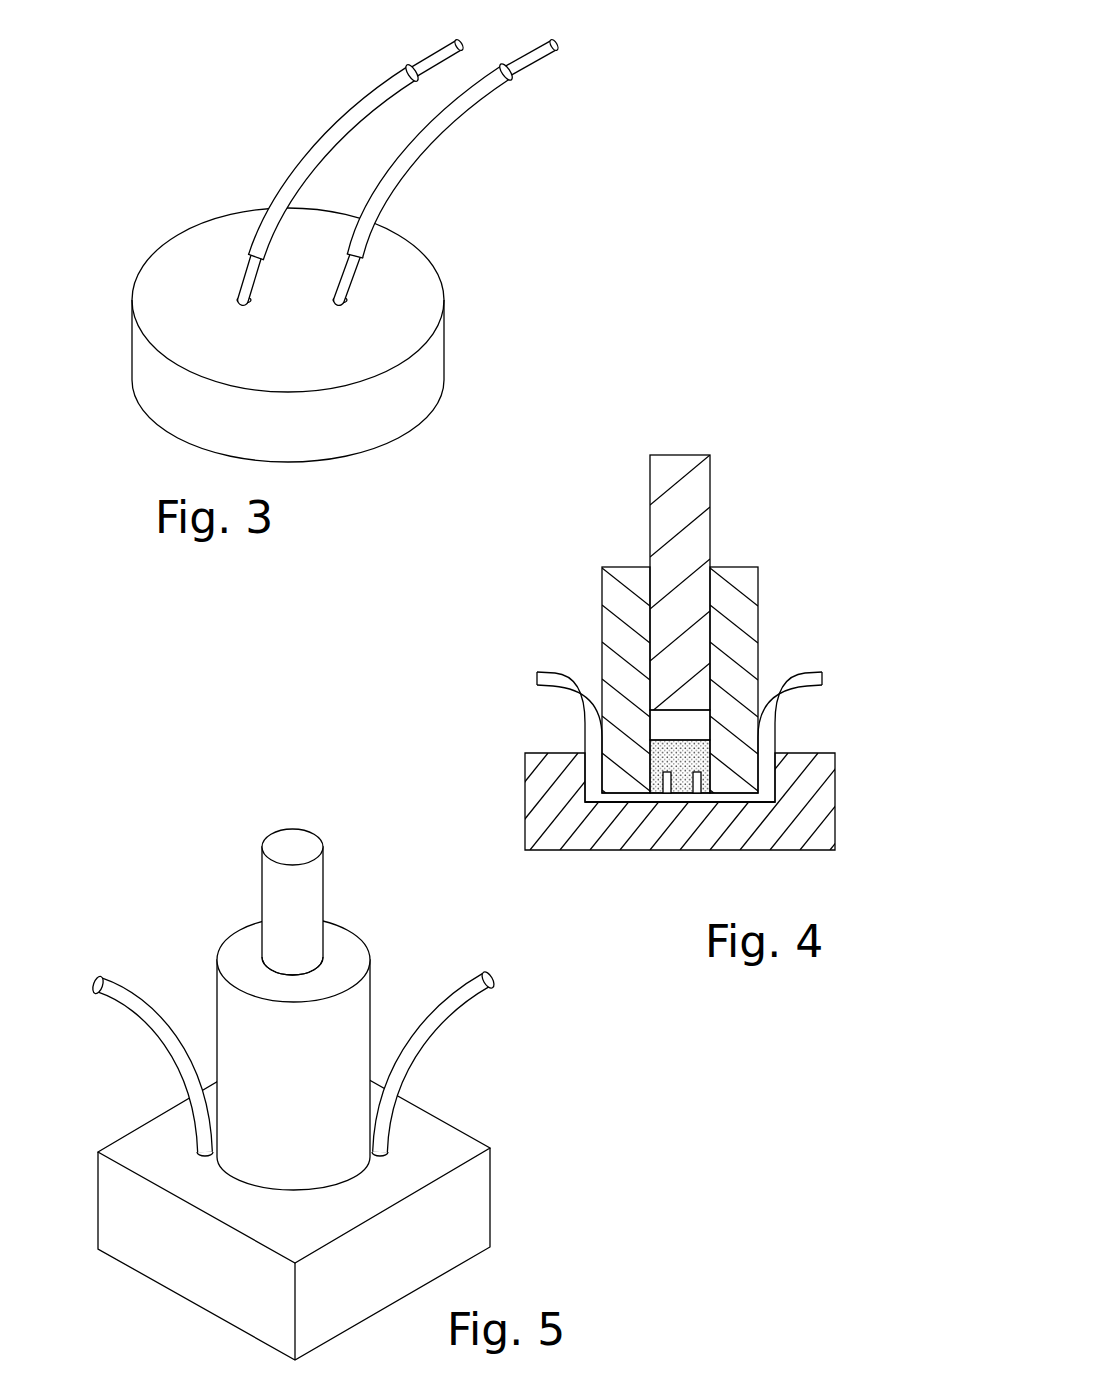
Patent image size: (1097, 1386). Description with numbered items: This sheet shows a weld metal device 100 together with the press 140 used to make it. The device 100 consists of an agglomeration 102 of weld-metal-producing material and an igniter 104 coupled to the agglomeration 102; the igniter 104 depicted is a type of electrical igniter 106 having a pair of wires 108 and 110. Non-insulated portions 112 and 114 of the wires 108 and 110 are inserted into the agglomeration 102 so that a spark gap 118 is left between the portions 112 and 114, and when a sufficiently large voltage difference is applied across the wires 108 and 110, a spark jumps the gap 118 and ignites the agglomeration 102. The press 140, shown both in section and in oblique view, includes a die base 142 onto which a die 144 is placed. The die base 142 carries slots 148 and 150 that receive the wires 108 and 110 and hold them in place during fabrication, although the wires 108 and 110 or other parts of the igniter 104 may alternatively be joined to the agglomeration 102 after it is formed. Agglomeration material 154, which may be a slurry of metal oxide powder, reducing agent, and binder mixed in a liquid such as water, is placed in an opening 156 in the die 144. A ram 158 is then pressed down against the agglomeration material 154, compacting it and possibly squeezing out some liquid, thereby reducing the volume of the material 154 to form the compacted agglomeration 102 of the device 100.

In FIG. 3, the weld metal device 100 is at (316, 244).
In FIG. 3, the agglomeration 102 is at (292, 335).
In FIG. 3, the igniter 104 is at (320, 244).
In FIG. 3, the electrical igniter 106 is at (393, 163).
In FIG. 3, the wire 108 is at (370, 108).
In FIG. 4, the wire 108 is at (563, 670).
In FIG. 5, the wire 108 is at (120, 983).
In FIG. 3, the wire 110 is at (467, 107).
In FIG. 4, the wire 110 is at (790, 673).
In FIG. 5, the wire 110 is at (452, 983).
In FIG. 3, the non-insulated portion 112 is at (240, 282).
In FIG. 3, the non-insulated portion 114 is at (343, 280).
In FIG. 3, the spark gap 118 is at (290, 312).
In FIG. 4, the press 140 is at (670, 663).
In FIG. 5, the press 140 is at (331, 1073).
In FIG. 4, the die base 142 is at (670, 826).
In FIG. 5, the die base 142 is at (443, 1273).
In FIG. 4, the die 144 is at (600, 618).
In FIG. 5, the die 144 is at (372, 1007).
In FIG. 4, the slot 148 is at (620, 810).
In FIG. 4, the slot 150 is at (728, 810).
In FIG. 4, the agglomeration material 154 is at (687, 753).
In FIG. 4, the opening 156 is at (717, 557).
In FIG. 5, the opening 156 is at (330, 952).
In FIG. 4, the ram 158 is at (688, 490).
In FIG. 5, the ram 158 is at (298, 883).